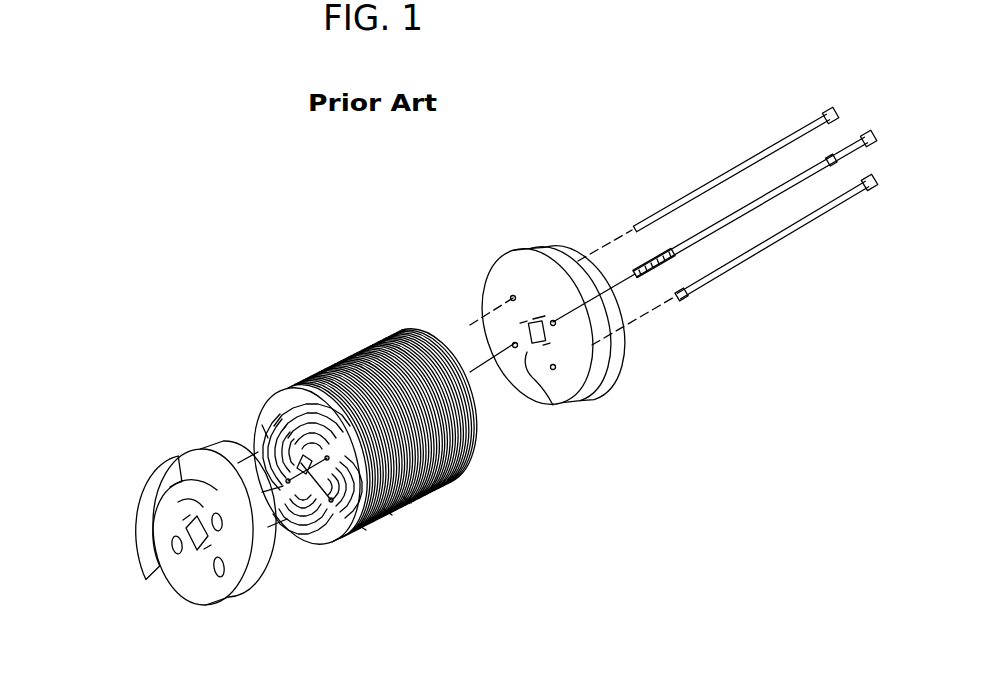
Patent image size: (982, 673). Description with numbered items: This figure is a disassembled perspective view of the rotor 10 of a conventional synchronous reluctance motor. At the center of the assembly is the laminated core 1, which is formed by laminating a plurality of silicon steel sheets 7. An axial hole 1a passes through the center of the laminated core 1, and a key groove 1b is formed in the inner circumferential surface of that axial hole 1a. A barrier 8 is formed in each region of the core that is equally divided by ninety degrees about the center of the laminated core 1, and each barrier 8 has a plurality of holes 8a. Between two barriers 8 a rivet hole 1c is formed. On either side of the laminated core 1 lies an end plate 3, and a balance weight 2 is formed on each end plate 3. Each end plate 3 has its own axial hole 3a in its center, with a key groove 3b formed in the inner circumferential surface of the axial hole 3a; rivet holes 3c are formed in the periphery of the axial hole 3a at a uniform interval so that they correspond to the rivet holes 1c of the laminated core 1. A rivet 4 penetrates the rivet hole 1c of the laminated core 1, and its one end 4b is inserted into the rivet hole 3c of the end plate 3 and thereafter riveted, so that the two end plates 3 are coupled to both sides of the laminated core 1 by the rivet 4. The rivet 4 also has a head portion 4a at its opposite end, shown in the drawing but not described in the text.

The rotor 10 is at (345, 265).
The laminated core 1 is at (330, 352).
The axial hole 1a is at (362, 528).
The key groove 1b is at (388, 512).
The rivet hole 1c is at (265, 432).
The silicon steel sheet 7 is at (306, 380).
The barrier 8 is at (249, 428).
The holes 8a is at (407, 500).
The balance weight 2 is at (163, 480).
The end plate 3 is at (193, 452).
The axial hole 3a is at (152, 500).
The key groove 3b is at (203, 584).
The rivet hole 3c is at (248, 594).
The rivet 4 is at (687, 199).
The bolt head 4a is at (869, 193).
The one end 4b is at (687, 297).